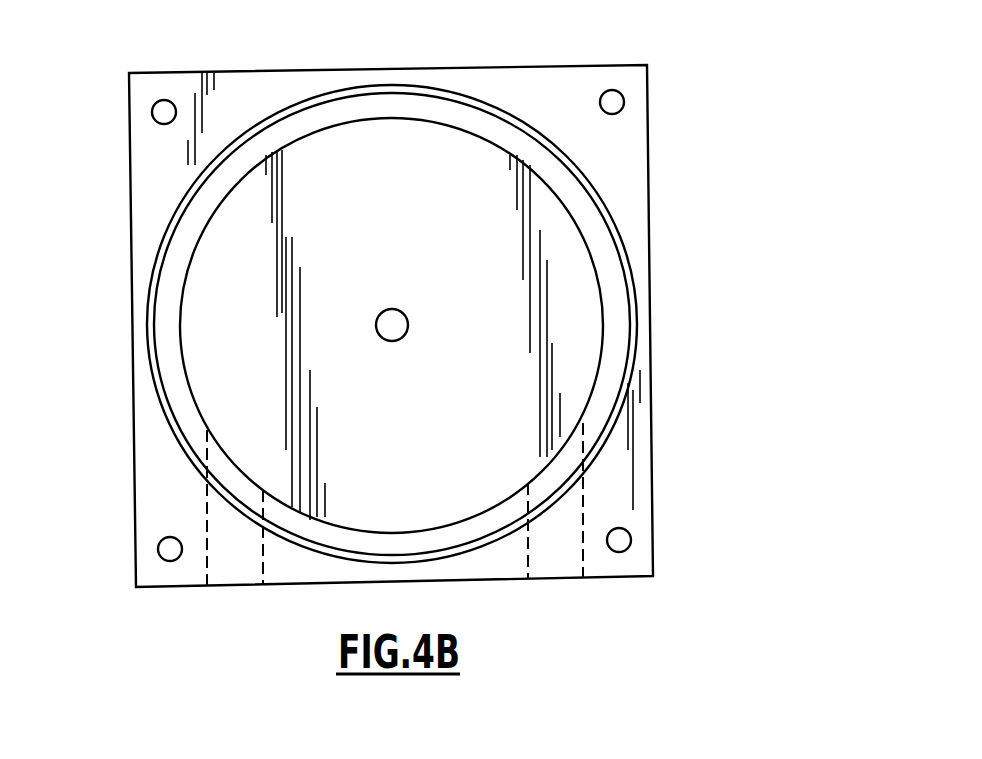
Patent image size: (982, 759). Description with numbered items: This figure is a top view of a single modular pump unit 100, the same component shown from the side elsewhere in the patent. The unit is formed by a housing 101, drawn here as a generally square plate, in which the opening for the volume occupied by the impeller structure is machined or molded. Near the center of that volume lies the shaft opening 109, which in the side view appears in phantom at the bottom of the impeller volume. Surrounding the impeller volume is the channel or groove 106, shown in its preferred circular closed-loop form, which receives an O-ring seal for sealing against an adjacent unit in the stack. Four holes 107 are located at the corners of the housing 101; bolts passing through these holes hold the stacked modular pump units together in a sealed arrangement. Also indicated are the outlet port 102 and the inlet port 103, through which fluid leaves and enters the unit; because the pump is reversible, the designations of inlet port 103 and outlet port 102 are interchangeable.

The modular pump unit 100 is at (757, 215).
The housing 101 is at (653, 407).
The outlet port 102 is at (226, 586).
The inlet port 103 is at (548, 583).
The channel or groove 106 is at (597, 202).
The holes 107 is at (152, 112).
The shaft opening 109 is at (408, 323).